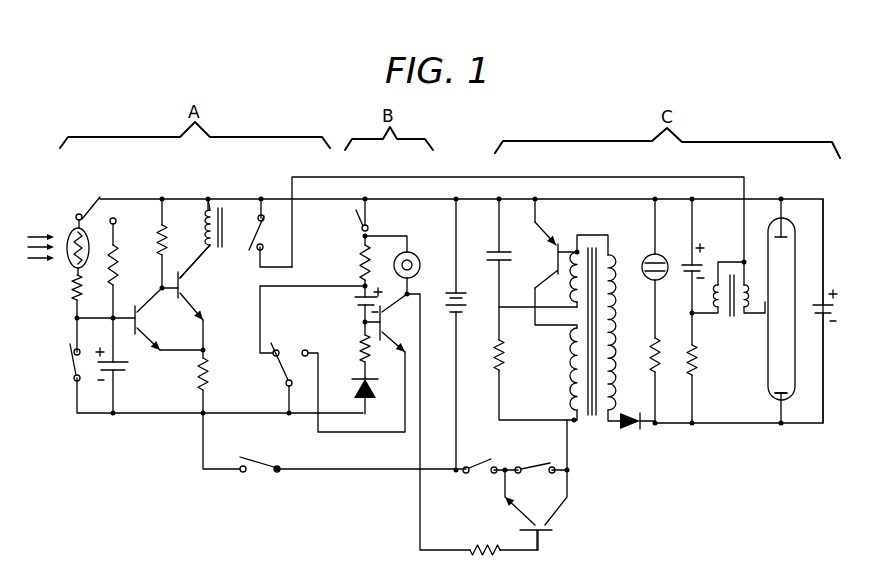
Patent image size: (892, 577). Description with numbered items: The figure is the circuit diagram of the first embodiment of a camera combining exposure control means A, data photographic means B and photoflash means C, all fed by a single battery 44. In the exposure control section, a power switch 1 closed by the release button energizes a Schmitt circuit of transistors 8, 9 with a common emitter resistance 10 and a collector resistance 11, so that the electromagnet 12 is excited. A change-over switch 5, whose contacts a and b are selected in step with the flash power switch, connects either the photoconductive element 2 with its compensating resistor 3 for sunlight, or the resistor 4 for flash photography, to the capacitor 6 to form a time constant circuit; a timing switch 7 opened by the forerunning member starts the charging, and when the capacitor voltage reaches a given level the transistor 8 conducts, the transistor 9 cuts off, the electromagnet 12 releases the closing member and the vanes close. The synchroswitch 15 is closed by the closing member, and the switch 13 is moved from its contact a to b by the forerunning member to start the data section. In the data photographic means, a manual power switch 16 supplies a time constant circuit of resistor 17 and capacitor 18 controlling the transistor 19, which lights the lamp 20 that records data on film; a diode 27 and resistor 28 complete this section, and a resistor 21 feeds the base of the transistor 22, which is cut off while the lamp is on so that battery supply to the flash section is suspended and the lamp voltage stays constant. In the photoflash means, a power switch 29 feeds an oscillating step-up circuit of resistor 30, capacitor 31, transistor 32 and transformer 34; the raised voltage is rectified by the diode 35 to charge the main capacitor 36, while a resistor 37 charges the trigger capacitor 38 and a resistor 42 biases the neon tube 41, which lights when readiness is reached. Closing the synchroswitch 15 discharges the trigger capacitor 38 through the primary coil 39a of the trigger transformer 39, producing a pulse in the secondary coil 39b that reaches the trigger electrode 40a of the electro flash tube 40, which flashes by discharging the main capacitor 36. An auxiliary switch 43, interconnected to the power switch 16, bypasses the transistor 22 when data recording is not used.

The power switch 1 is at (262, 468).
The photoconductive element 2 is at (68, 232).
The resistor 3 is at (70, 290).
The resistor 4 is at (118, 262).
The change-over switch 5 is at (88, 205).
The capacitor 6 is at (126, 372).
The timing switch 7 is at (72, 369).
The transistor 8 is at (139, 320).
The transistor 9 is at (181, 288).
The emitter resistance 10 is at (198, 376).
The collector resistance 11 is at (167, 238).
The electromagnet 12 is at (224, 230).
The switch 13 is at (283, 350).
The synchroswitch 15 is at (263, 222).
The power switch 16 is at (364, 218).
The resistor 17 is at (360, 258).
The capacitor 18 is at (357, 300).
The transistor 19 is at (382, 322).
The lamp 20 is at (414, 257).
The resistor 21 is at (474, 548).
The transistor 22 is at (519, 506).
The diode 27 is at (368, 400).
The resistor 28 is at (370, 352).
The power switch 29 is at (471, 467).
The resistor 30 is at (504, 351).
The capacitor 31 is at (490, 252).
The transistor 32 is at (556, 250).
The transformer 34 is at (592, 235).
The diode 35 is at (631, 431).
The main capacitor 36 is at (833, 320).
The resistor 37 is at (688, 372).
The trigger capacitor 38 is at (688, 262).
The trigger transformer 39 is at (729, 296).
The primary coil 39a is at (716, 308).
The secondary coil 39b is at (765, 320).
The electro flash tube 40 is at (779, 318).
The trigger electrode 40a is at (753, 380).
The neon tube 41 is at (647, 281).
The resistor 42 is at (650, 352).
The auxiliary switch 43 is at (537, 467).
The battery 44 is at (464, 300).